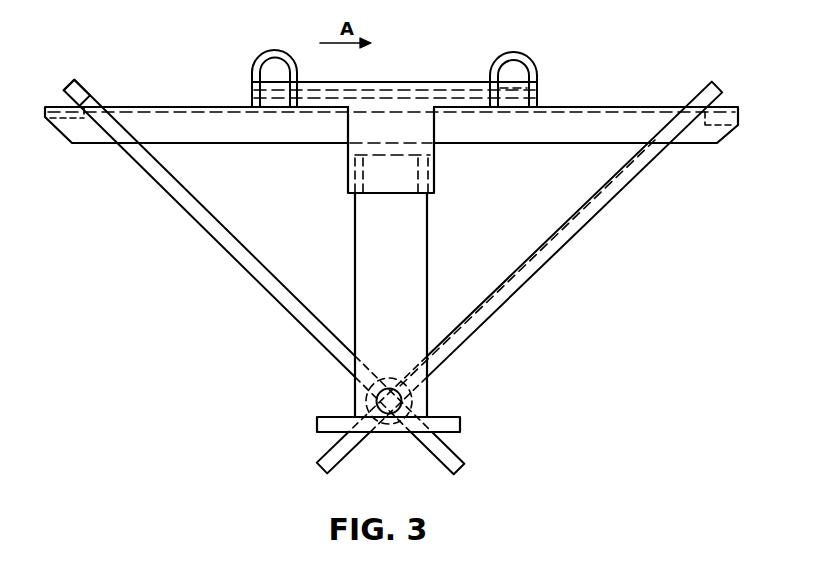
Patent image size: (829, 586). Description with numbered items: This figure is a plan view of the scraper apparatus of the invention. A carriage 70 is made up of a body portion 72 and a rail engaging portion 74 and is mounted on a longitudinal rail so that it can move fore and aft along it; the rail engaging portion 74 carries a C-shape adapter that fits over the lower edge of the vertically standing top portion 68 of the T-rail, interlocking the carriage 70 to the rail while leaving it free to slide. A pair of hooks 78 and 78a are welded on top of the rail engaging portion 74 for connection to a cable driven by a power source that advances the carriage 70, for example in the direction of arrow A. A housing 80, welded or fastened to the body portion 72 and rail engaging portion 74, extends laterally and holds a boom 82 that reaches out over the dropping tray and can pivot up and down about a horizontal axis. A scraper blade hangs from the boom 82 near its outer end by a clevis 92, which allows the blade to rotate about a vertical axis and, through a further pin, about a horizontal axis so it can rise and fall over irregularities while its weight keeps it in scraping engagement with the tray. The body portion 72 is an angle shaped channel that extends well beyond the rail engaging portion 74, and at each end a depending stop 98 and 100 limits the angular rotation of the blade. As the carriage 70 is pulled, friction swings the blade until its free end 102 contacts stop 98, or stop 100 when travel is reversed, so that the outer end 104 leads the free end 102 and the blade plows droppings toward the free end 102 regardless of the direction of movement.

The carriage 70 is at (636, 59).
The body portion 72 is at (598, 125).
The rail engaging portion 74 is at (418, 81).
The hook 78 is at (273, 50).
The hook 78a is at (518, 56).
The top portion of T-rail 68 is at (537, 90).
The housing 80 is at (434, 177).
The boom 82 is at (418, 251).
The clevis 92 is at (428, 393).
The depending stop 98 is at (63, 115).
The depending stop 100 is at (733, 125).
The free end 102 is at (81, 94).
The outer end 104 is at (447, 457).